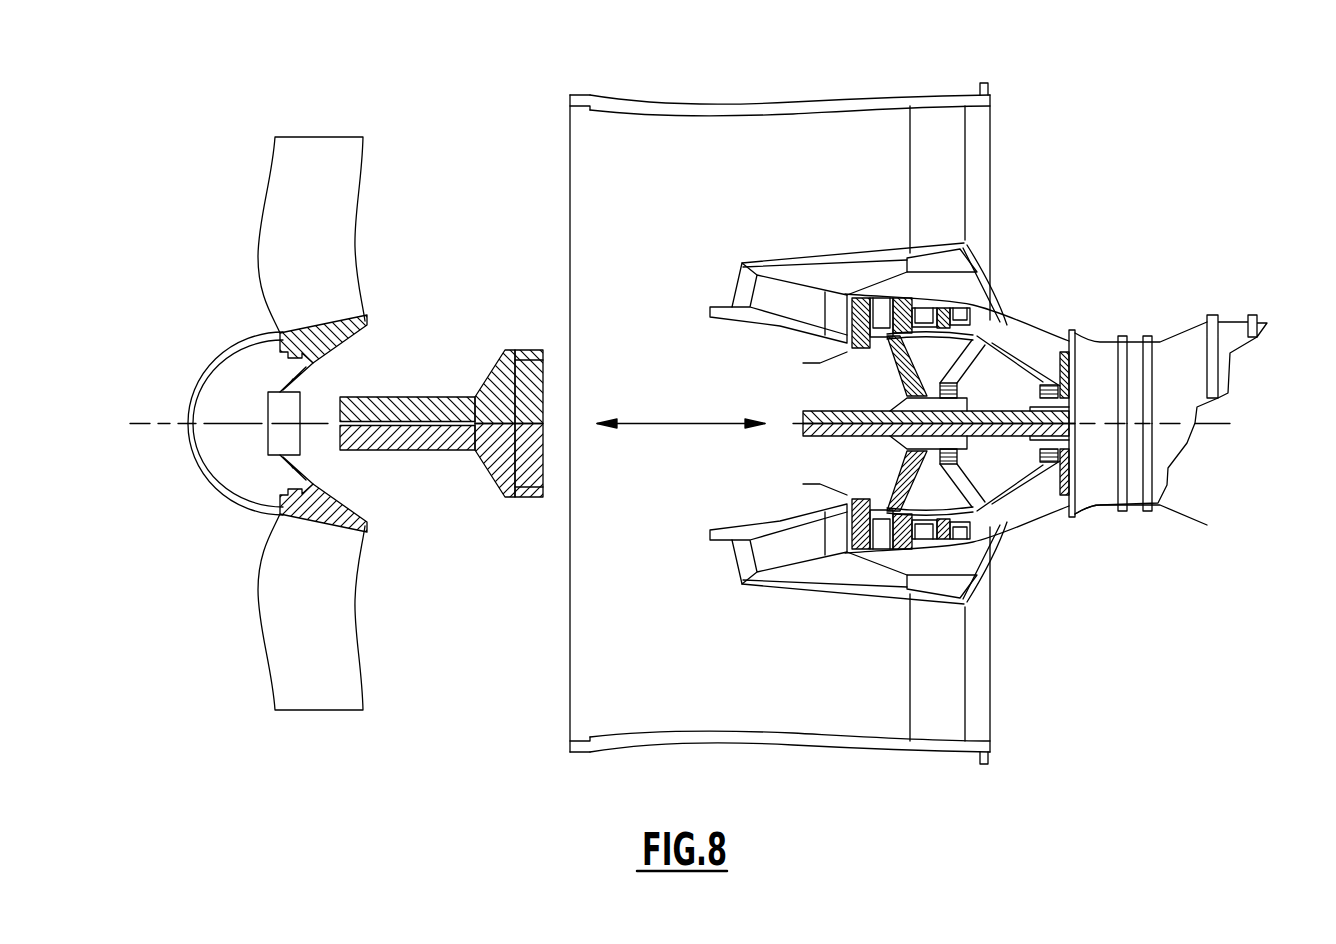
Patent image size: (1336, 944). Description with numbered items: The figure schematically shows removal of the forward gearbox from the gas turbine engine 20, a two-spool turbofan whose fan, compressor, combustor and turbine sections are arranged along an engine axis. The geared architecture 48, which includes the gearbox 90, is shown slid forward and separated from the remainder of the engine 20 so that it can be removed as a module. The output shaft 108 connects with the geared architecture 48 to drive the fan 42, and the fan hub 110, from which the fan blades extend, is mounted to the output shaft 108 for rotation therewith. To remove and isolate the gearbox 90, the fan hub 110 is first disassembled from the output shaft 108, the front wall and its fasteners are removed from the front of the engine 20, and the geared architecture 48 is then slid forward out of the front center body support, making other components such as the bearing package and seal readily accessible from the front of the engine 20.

The gas turbine engine 20 is at (1106, 246).
The fan 42 is at (288, 112).
The geared architecture 48 is at (521, 352).
The gearbox 90 is at (527, 477).
The output shaft 108 is at (410, 442).
The fan hub 110 is at (273, 440).